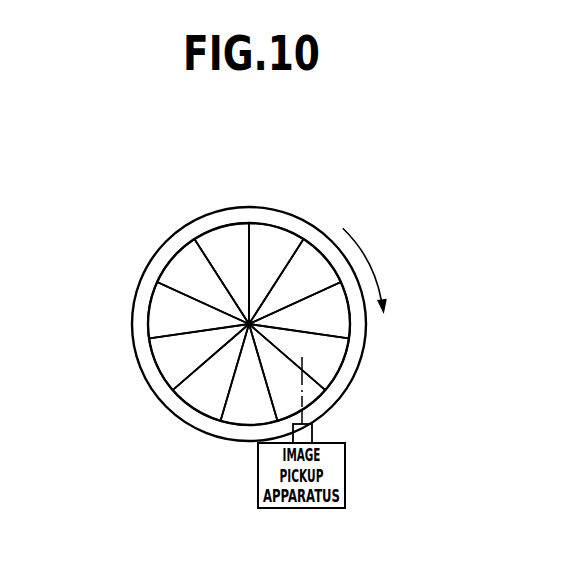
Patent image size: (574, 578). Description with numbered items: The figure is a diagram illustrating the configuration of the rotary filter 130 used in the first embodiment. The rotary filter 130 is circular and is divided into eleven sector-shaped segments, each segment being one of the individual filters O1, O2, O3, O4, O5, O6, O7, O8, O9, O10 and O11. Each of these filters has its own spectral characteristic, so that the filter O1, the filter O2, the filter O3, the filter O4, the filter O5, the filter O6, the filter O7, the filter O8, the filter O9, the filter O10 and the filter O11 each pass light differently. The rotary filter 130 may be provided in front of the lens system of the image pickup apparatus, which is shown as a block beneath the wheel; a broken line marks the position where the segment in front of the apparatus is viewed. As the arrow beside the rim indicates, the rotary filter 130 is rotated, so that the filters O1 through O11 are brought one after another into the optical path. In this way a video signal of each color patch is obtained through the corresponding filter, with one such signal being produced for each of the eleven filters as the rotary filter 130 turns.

The rotary filter 130 is at (242, 207).
The filter O1 is at (273, 240).
The filter O2 is at (312, 258).
The filter O3 is at (340, 317).
The filter O4 is at (327, 363).
The filter O5 is at (323, 407).
The filter O6 is at (245, 410).
The filter O7 is at (202, 403).
The filter O8 is at (170, 364).
The filter O9 is at (167, 318).
The filter O10 is at (178, 268).
The filter O11 is at (227, 240).